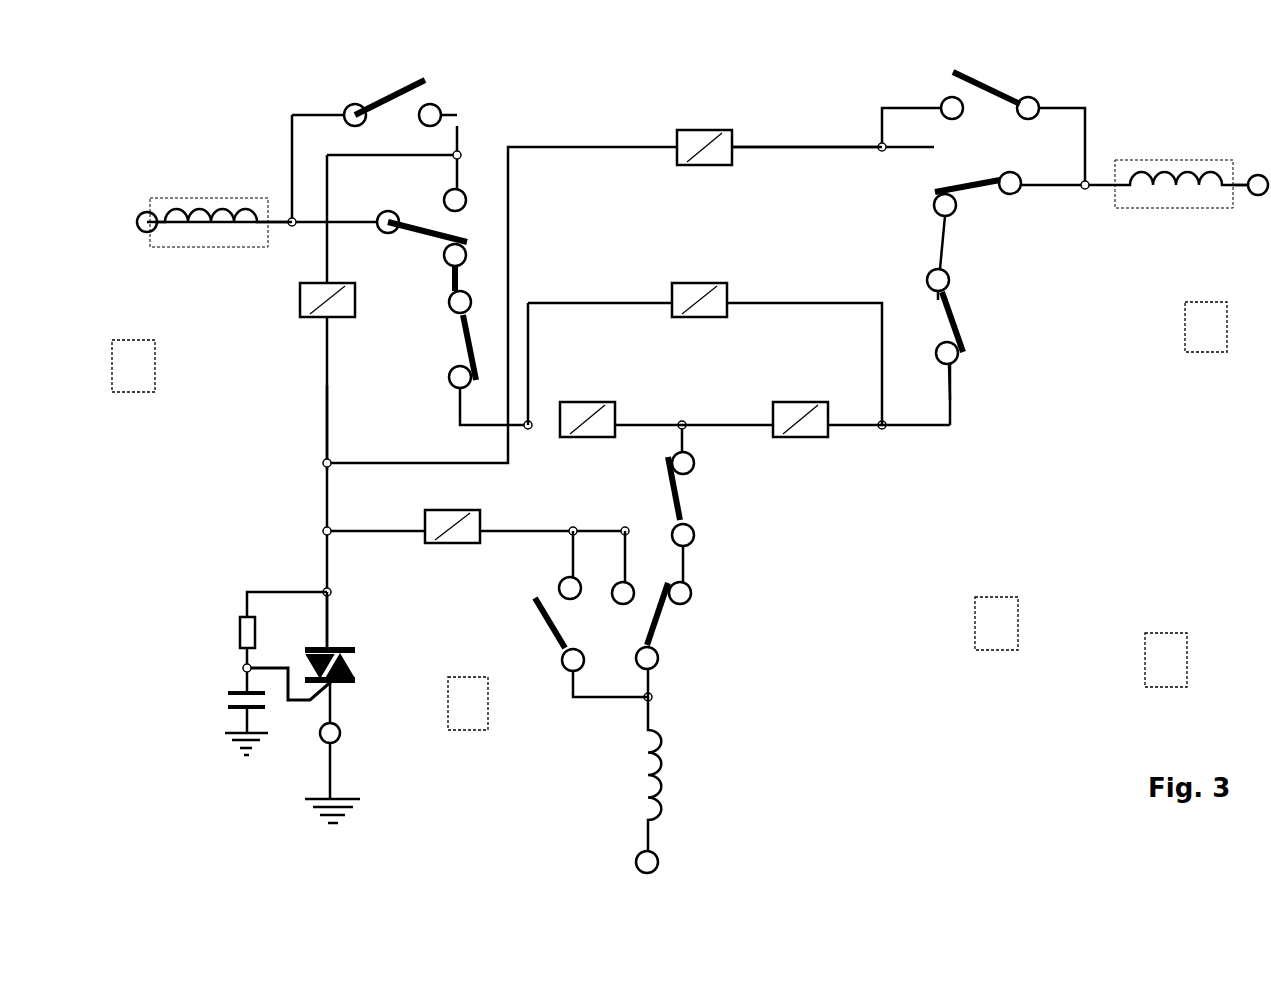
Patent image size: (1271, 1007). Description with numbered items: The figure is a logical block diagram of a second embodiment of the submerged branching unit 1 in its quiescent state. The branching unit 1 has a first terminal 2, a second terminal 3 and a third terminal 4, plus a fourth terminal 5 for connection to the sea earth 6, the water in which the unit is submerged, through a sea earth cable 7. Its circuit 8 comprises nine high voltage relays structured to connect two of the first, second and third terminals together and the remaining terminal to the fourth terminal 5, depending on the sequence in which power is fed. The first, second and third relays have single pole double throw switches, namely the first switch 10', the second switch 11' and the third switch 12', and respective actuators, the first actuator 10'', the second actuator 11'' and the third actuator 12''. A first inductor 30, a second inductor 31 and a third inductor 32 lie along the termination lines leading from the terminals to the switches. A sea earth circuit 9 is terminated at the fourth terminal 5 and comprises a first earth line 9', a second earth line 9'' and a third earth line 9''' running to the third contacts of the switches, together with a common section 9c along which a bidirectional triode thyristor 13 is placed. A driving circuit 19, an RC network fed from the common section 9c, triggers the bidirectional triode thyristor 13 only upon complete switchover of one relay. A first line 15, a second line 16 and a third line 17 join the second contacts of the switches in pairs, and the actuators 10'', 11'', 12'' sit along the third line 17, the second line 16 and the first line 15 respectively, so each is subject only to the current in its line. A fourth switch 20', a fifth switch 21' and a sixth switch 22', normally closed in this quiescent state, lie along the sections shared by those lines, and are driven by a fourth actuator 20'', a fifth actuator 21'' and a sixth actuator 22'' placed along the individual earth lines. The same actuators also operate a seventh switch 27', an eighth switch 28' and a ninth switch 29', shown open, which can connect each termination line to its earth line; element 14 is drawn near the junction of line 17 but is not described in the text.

The branching unit 1 is at (1107, 628).
The first terminal 2 is at (133, 340).
The second terminal 3 is at (1205, 302).
The third terminal 4 is at (660, 862).
The fourth terminal 5 is at (340, 733).
The sea earth 6 is at (360, 812).
The sea earth cable 7 is at (337, 755).
The circuit 8 is at (893, 553).
The sea earth circuit 9 is at (234, 319).
The first earth line 9' is at (253, 405).
The second earth line 9'' is at (797, 101).
The third earth line 9''' is at (476, 461).
The common section 9c is at (325, 571).
The first switch 10' is at (510, 246).
The first actuator 10'' is at (866, 467).
The second switch 11' is at (1027, 235).
The second actuator 11'' is at (567, 454).
The third switch 12' is at (734, 653).
The third actuator 12'' is at (743, 259).
The bidirectional triode thyristor 13 is at (365, 663).
The connection line 14 is at (983, 408).
The first line 15 is at (616, 302).
The second line 16 is at (632, 424).
The third line 17 is at (952, 425).
The driving circuit 19 is at (225, 642).
The fourth switch 20' is at (583, 322).
The fourth actuator 20'' is at (261, 290).
The fifth switch 21' is at (1042, 351).
The fifth actuator 21'' is at (674, 100).
The sixth switch 22' is at (768, 516).
The sixth actuator 22'' is at (416, 559).
The seventh switch 27' is at (312, 84).
The eighth switch 28' is at (1048, 77).
The ninth switch 29' is at (576, 667).
The first inductor 30 is at (205, 185).
The second inductor 31 is at (1195, 160).
The third inductor 32 is at (677, 790).